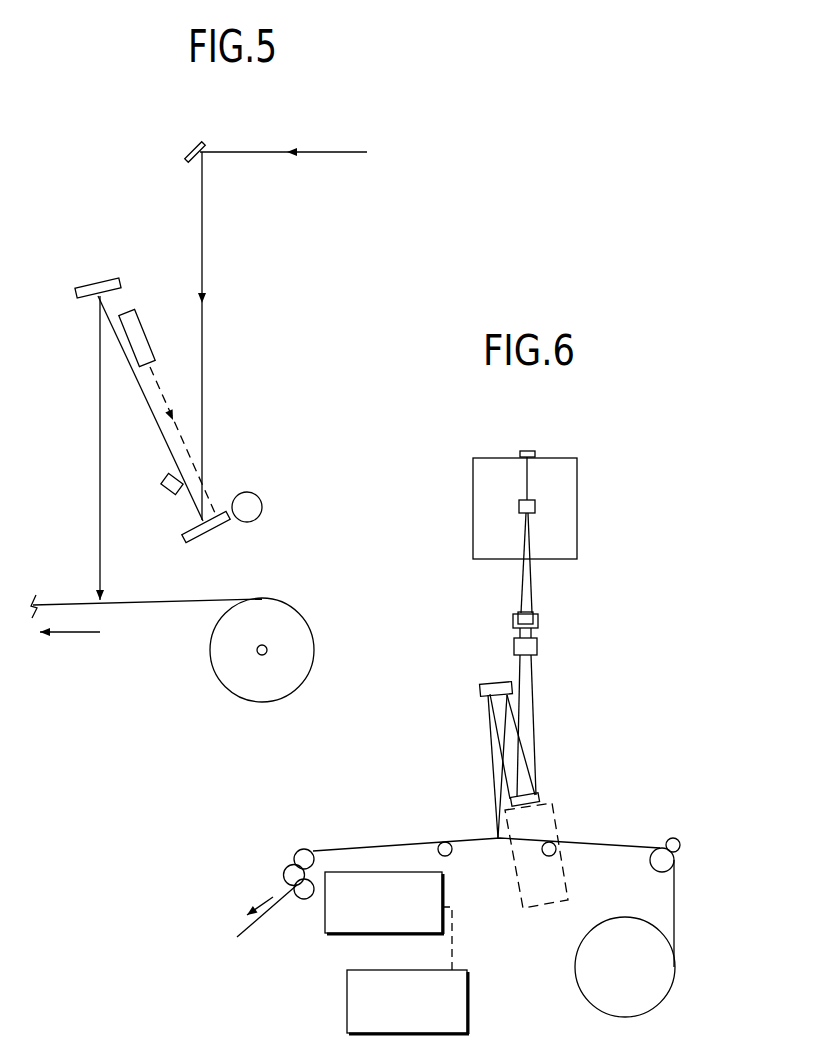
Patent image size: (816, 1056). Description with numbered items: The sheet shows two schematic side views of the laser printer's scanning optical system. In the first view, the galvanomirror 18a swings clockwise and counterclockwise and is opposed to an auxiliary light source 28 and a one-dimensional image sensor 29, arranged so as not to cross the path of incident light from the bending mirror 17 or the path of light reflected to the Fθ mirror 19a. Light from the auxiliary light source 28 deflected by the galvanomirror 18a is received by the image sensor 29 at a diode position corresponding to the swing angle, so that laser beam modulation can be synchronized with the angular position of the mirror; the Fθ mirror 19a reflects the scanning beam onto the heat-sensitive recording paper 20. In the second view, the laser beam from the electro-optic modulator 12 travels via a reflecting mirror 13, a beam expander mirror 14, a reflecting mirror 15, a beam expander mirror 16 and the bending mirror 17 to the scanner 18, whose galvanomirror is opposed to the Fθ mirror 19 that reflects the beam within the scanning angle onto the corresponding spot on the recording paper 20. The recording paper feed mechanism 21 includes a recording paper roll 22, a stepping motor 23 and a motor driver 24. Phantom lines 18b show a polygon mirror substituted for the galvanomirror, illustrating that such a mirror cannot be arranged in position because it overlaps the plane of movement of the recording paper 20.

In FIG. 6, the electro-optic modulator 12 is at (570, 499).
In FIG. 6, the reflecting mirror 13 is at (519, 504).
In FIG. 6, the beam expander mirror 14 is at (523, 450).
In FIG. 6, the reflecting mirror 15 is at (526, 612).
In FIG. 6, the beam expander mirror 16 is at (513, 621).
In FIG. 5, the bending mirror 17 is at (188, 149).
In FIG. 6, the bending mirror 17 is at (537, 648).
In FIG. 6, the scanner 18 is at (528, 812).
In FIG. 5, the galvanomirror 18a is at (194, 540).
In FIG. 6, the polygon mirror (phantom) 18b is at (543, 908).
In FIG. 6, the Fθ mirror 19 is at (485, 684).
In FIG. 5, the Fθ mirror 19a is at (100, 277).
In FIG. 5, the heat-sensitive recording paper 20 is at (68, 603).
In FIG. 6, the heat-sensitive recording paper 20 is at (462, 836).
In FIG. 6, the recording paper feed mechanism 21 is at (530, 1005).
In FIG. 6, the recording paper roll 22 is at (655, 982).
In FIG. 6, the stepping motor 23 is at (325, 918).
In FIG. 6, the motor driver 24 is at (347, 1005).
In FIG. 5, the auxiliary light source 28 is at (146, 350).
In FIG. 5, the one-dimensional image sensor 29 is at (163, 478).